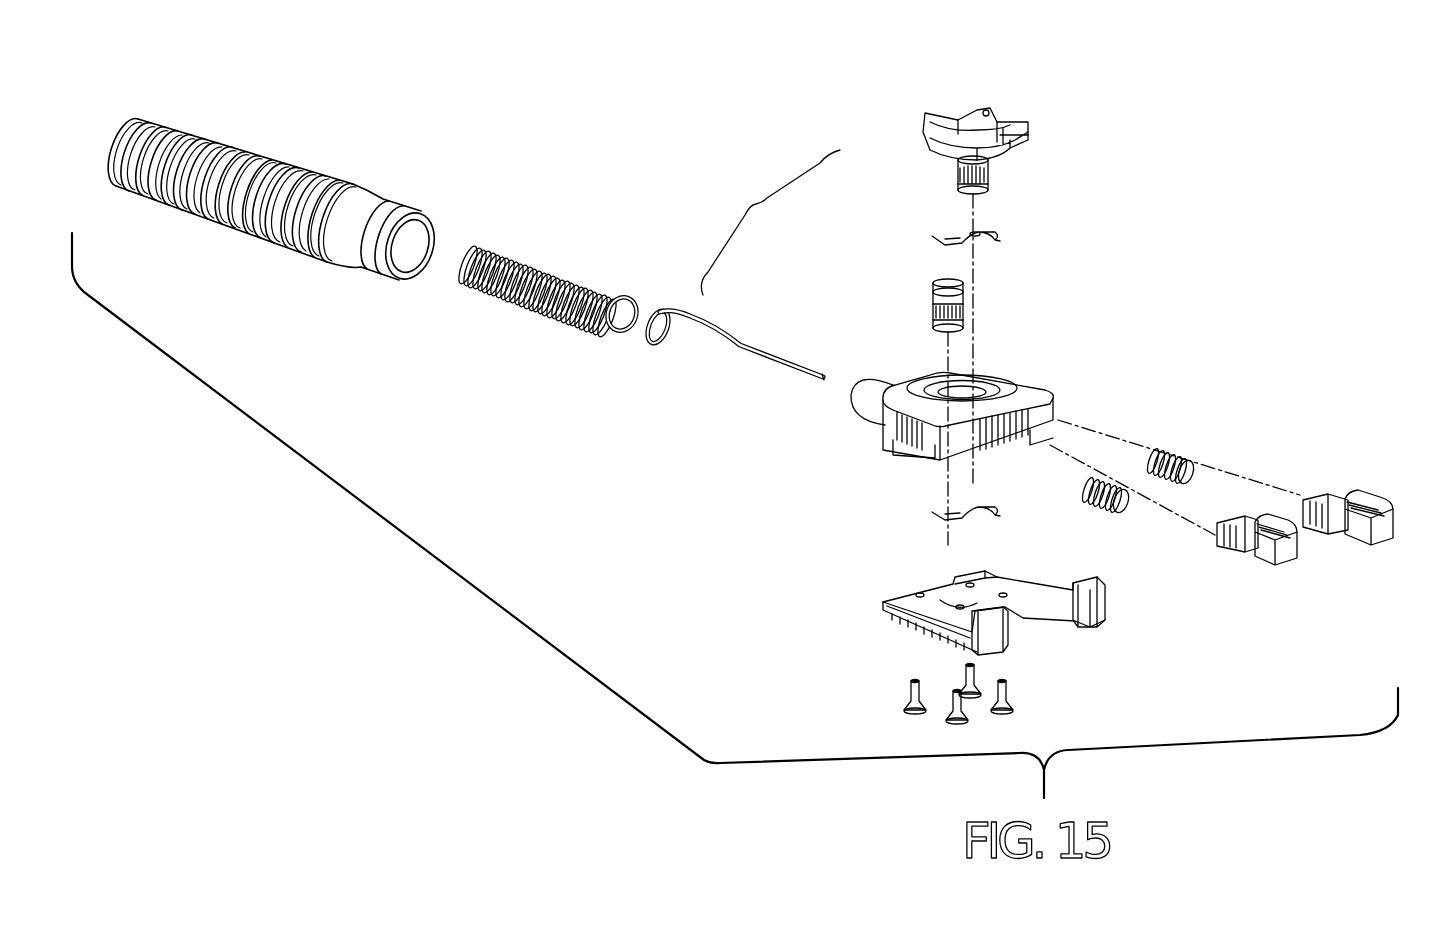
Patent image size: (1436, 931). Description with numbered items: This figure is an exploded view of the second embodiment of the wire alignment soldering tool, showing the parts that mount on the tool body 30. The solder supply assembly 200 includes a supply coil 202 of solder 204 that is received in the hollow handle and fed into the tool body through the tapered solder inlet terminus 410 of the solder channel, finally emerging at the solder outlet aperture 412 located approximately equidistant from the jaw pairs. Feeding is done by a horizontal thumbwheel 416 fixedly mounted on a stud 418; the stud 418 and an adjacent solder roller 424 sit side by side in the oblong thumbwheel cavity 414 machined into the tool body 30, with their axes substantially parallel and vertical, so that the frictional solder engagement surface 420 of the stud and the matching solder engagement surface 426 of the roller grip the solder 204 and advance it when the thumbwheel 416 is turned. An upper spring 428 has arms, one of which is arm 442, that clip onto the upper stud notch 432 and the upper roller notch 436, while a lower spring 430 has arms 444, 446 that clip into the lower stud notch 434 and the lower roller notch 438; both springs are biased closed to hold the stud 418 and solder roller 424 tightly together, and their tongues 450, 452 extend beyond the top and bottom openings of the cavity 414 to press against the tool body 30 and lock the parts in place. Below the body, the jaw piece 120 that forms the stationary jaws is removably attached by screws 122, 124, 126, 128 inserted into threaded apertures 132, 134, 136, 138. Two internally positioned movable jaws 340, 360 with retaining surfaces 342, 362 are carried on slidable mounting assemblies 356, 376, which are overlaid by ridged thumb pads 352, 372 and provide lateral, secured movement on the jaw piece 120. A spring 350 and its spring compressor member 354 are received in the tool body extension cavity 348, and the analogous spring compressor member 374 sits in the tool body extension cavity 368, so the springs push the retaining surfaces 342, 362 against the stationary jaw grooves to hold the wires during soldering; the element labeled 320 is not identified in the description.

The tool body portion 30 is at (880, 435).
The jaw piece 120 is at (883, 605).
The screw 122 is at (912, 712).
The screw 124 is at (957, 723).
The screw 126 is at (970, 698).
The screw 128 is at (1013, 705).
The threaded aperture 132 is at (917, 594).
The threaded aperture 134 is at (958, 609).
The threaded aperture 136 is at (973, 583).
The threaded aperture 138 is at (1006, 593).
The solder supply assembly 200 is at (758, 206).
The supply coil 202 is at (550, 270).
The solder 204 is at (785, 370).
The set screw 320 is at (1186, 468).
The movable jaw 340 is at (1265, 568).
The retaining surface 342 is at (1280, 568).
The tool body extension cavity 348 is at (930, 457).
The spring 350 is at (1085, 502).
The ridged thumb pad 352 is at (1262, 520).
The spring compressor member 354 is at (1222, 540).
The slidable mounting assembly 356 is at (1255, 560).
The movable jaw 360 is at (1358, 548).
The retaining surface 362 is at (1382, 548).
The tool body extension cavity 368 is at (1055, 398).
The ridged thumb pad 372 is at (1357, 492).
The spring compressor member 374 is at (1322, 497).
The slidable mounting assembly 376 is at (1378, 497).
The tapered solder inlet terminus 410 is at (1000, 238).
The solder outlet aperture 412 is at (1055, 420).
The oblong thumbwheel cavity 414 is at (972, 400).
The thumbwheel 416 is at (990, 110).
The stud 418 is at (1005, 155).
The solder engagement surface 420 is at (957, 170).
The solder roller 424 is at (960, 300).
The solder engagement surface 426 is at (963, 313).
The upper spring 428 is at (985, 232).
The lower spring 430 is at (950, 522).
The upper stud notch 432 is at (955, 165).
The lower stud notch 434 is at (958, 184).
The upper roller notch 436 is at (945, 296).
The lower roller notch 438 is at (940, 325).
The arm 442 is at (938, 242).
The arm 444 is at (982, 505).
The arm 446 is at (935, 515).
The tongue 450 is at (1000, 241).
The tongue 452 is at (980, 518).